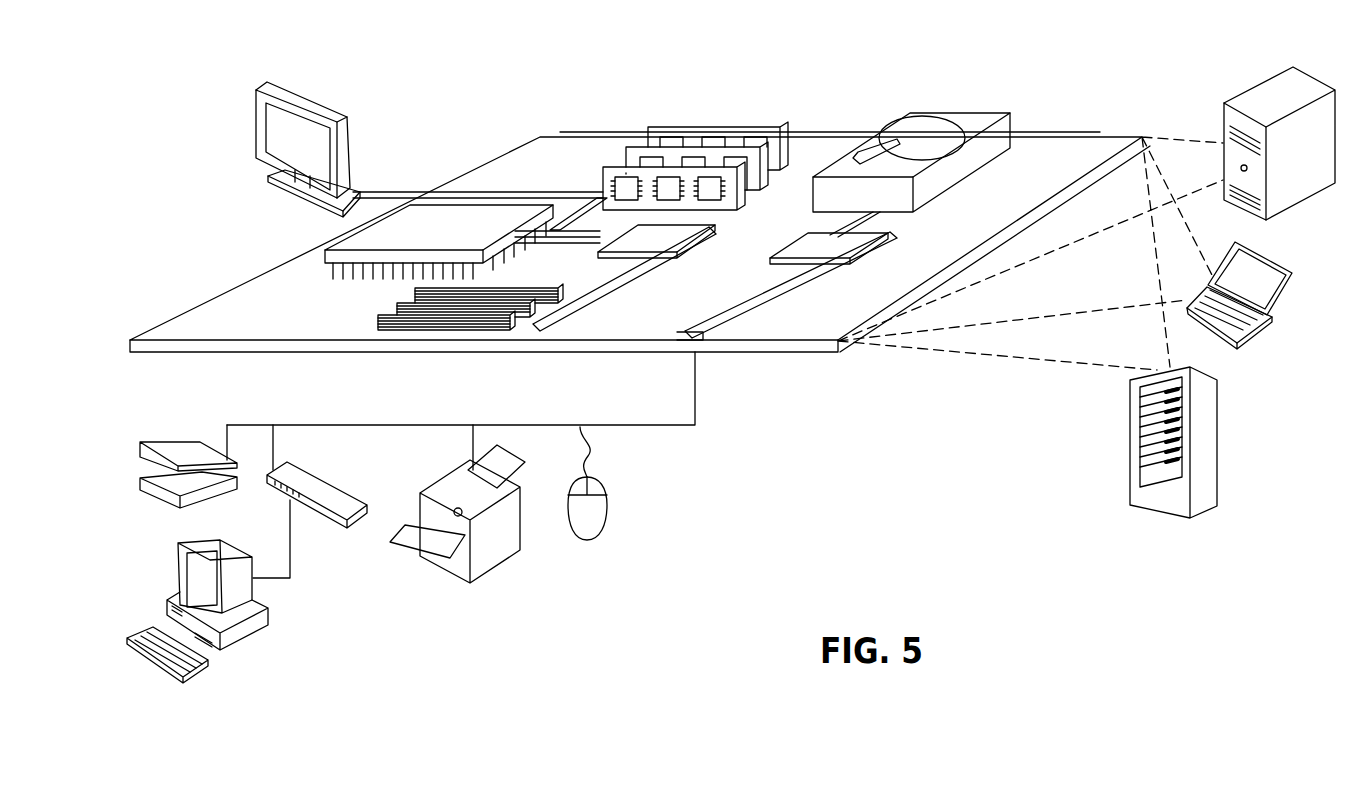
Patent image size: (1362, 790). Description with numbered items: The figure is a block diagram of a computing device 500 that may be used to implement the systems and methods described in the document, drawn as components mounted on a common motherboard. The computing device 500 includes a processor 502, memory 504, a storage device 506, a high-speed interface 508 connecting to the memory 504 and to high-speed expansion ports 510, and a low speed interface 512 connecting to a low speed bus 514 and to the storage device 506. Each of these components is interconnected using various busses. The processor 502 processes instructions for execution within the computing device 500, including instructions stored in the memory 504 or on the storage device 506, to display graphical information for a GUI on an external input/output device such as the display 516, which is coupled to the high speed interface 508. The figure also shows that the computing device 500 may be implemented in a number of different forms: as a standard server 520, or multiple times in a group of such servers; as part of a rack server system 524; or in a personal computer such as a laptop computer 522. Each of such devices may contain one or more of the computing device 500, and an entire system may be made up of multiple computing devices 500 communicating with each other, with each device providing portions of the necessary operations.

The computing device 500 is at (456, 107).
The processor 502 is at (323, 257).
The memory 504 is at (657, 127).
The storage device 506 is at (893, 113).
The high-speed interface 508 is at (640, 237).
The high-speed expansion ports 510 is at (403, 313).
The low speed interface 512 is at (807, 240).
The low speed bus 514 is at (703, 342).
The display 516 is at (260, 86).
The standard server 520 is at (1224, 124).
The laptop computer 522 is at (1243, 345).
The rack server system 524 is at (1128, 468).